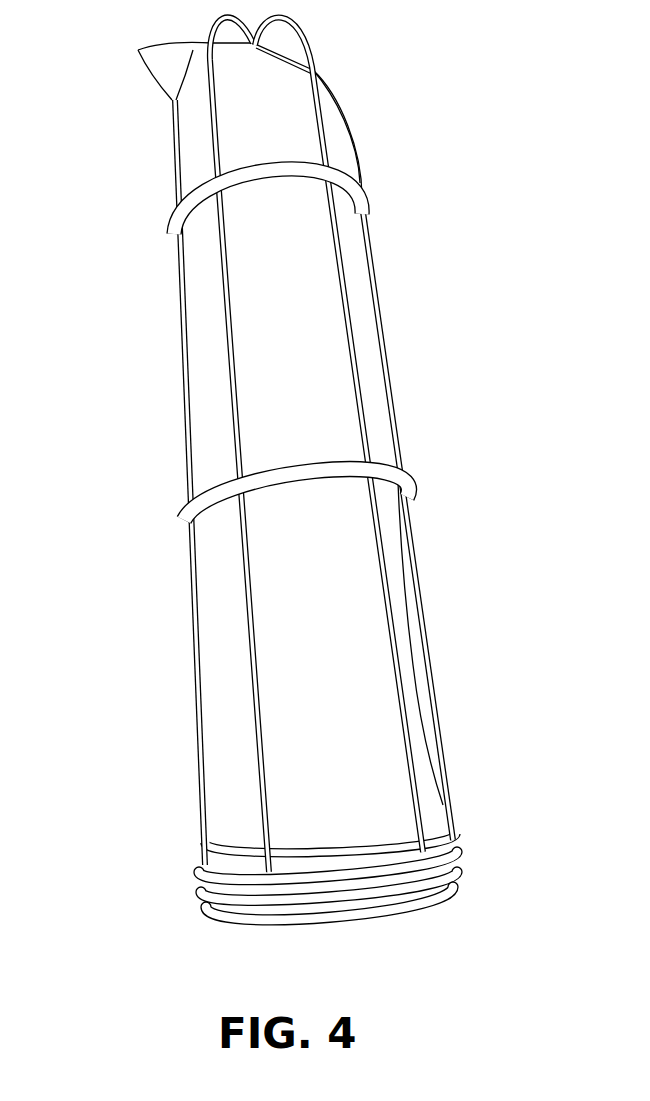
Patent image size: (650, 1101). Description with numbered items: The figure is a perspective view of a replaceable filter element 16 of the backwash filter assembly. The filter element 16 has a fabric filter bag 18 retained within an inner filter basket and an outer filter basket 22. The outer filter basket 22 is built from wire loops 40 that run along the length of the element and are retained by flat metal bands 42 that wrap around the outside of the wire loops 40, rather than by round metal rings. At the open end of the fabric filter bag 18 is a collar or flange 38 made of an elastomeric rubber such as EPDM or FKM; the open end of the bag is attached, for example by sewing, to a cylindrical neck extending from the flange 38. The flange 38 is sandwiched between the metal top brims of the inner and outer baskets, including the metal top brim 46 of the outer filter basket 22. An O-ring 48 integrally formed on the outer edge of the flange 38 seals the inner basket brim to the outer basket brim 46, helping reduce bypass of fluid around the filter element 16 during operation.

The filter element 16 is at (285, 492).
The fabric filter bag 18 is at (355, 302).
The outer filter basket 22 is at (230, 413).
The flange 38 is at (340, 910).
The wire loops 40 is at (387, 575).
The flat metal bands 42 is at (352, 167).
The metal top brim of the outer filter basket 46 is at (200, 893).
The O-ring 48 is at (435, 807).